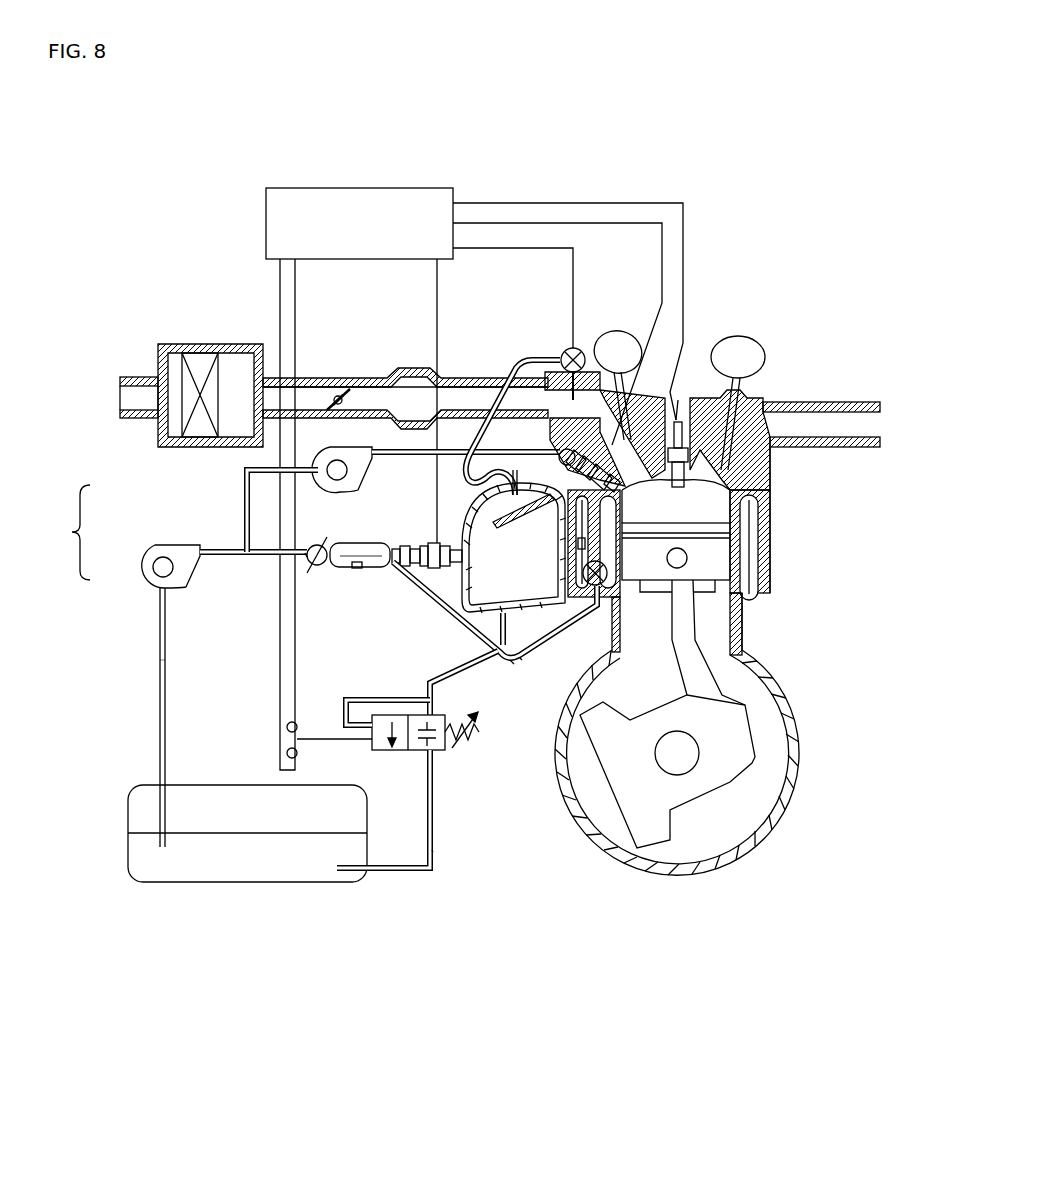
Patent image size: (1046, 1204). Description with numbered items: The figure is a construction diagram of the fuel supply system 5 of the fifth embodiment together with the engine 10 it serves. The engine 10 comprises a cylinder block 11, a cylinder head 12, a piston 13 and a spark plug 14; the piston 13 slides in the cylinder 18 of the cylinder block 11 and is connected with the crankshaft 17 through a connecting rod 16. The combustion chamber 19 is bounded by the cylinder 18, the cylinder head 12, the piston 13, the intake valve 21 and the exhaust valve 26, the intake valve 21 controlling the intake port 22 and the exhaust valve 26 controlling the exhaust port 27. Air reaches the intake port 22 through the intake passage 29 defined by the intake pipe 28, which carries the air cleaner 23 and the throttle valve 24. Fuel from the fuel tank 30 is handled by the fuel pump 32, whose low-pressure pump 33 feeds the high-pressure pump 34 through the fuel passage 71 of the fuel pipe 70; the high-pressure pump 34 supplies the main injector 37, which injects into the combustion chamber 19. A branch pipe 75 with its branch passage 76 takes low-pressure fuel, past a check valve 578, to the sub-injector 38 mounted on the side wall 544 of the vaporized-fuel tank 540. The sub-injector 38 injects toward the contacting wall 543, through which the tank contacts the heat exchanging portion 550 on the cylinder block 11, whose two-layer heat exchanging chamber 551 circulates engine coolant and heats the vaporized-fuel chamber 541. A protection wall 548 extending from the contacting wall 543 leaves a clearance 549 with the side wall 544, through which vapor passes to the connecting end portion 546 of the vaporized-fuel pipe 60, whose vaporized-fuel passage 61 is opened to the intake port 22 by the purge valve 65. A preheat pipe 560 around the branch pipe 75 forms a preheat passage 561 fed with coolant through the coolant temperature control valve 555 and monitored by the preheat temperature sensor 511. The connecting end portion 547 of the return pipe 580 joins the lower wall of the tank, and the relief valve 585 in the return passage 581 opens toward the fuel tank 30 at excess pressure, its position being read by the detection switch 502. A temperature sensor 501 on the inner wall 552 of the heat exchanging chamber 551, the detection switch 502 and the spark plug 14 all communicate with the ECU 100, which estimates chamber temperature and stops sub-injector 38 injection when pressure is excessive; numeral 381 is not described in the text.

The fuel supply system 5 is at (228, 922).
The engine 10 is at (763, 888).
The cylinder block 11 is at (743, 641).
The cylinder head 12 is at (757, 476).
The piston 13 is at (722, 562).
The spark plug 14 is at (680, 420).
The connecting rod 16 is at (698, 682).
The crankshaft 17 is at (684, 748).
The cylinder 18 is at (722, 523).
The combustion chamber 19 is at (718, 498).
The intake valve 21 is at (618, 450).
The intake port 22 is at (670, 390).
The air cleaner 23 is at (200, 353).
The throttle valve 24 is at (337, 395).
The exhaust valve 26 is at (748, 408).
The exhaust port 27 is at (838, 402).
The intake pipe 28 is at (128, 377).
The intake passage 29 is at (148, 375).
The fuel tank 30 is at (337, 882).
The fuel pump 32 is at (66, 532).
The low-pressure pump 33 is at (143, 565).
The high-pressure pump 34 is at (318, 468).
The main injector 37 is at (612, 333).
The sub-injector 38 is at (396, 546).
The vaporized-fuel pipe 60 is at (447, 378).
The vaporized-fuel passage 61 is at (469, 410).
The purge valve 65 is at (571, 347).
The fuel pipe 70 is at (160, 694).
The fuel passage 71 is at (160, 661).
The branch pipe 75 is at (249, 548).
The branch passage 76 is at (265, 556).
The electronic control unit 100 is at (266, 224).
The injector sensor 381 is at (357, 569).
The temperature sensor 501 is at (563, 633).
The detection switch 502 is at (299, 727).
The preheat temperature sensor 511 is at (312, 565).
The vaporized-fuel tank 540 is at (522, 665).
The vaporized-fuel chamber 541 is at (462, 614).
The contacting wall 543 is at (500, 636).
The side wall 544 is at (478, 527).
The connecting end portion 546 is at (517, 440).
The connecting end portion 547 is at (514, 668).
The protection wall 548 is at (512, 470).
The clearance 549 is at (505, 516).
The heat exchanging portion 550 is at (770, 590).
The heat exchanging chamber 551 is at (578, 495).
The inner wall 552 is at (497, 578).
The coolant temperature control valve 555 is at (700, 612).
The preheat pipe 560 is at (490, 662).
The preheat passage 561 is at (511, 668).
The check valve 578 is at (308, 564).
The return pipe 580 is at (412, 870).
The return passage 581 is at (433, 851).
The relief valve 585 is at (398, 752).